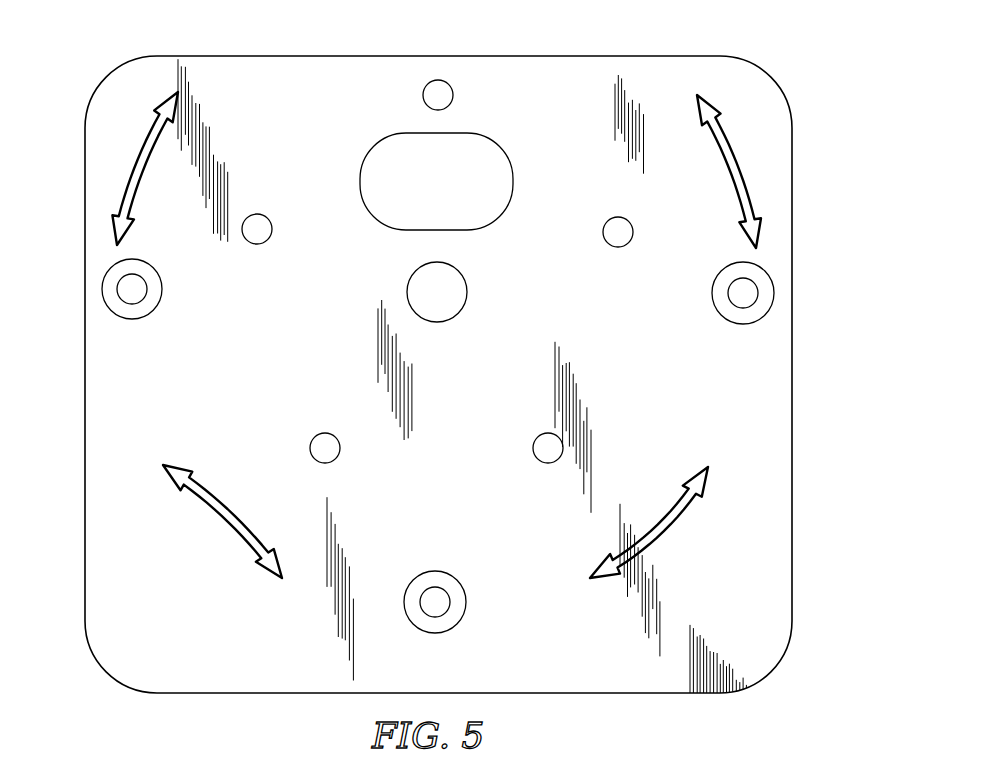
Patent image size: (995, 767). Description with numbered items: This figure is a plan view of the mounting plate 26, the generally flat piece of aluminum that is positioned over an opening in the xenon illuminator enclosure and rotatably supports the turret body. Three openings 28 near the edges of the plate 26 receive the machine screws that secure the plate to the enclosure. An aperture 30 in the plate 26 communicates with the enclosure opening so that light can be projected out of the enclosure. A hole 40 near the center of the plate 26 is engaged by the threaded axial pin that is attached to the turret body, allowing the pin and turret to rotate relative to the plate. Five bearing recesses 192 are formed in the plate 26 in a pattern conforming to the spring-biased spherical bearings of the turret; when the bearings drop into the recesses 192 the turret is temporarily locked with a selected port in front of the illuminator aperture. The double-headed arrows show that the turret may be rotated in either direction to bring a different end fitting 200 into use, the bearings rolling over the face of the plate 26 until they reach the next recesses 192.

The mounting plate 26 is at (792, 413).
The openings 28 is at (163, 290).
The aperture 30 is at (490, 138).
The hole 40 is at (407, 284).
The bearing recesses 192 is at (422, 96).
The end fitting 200 is at (138, 148).